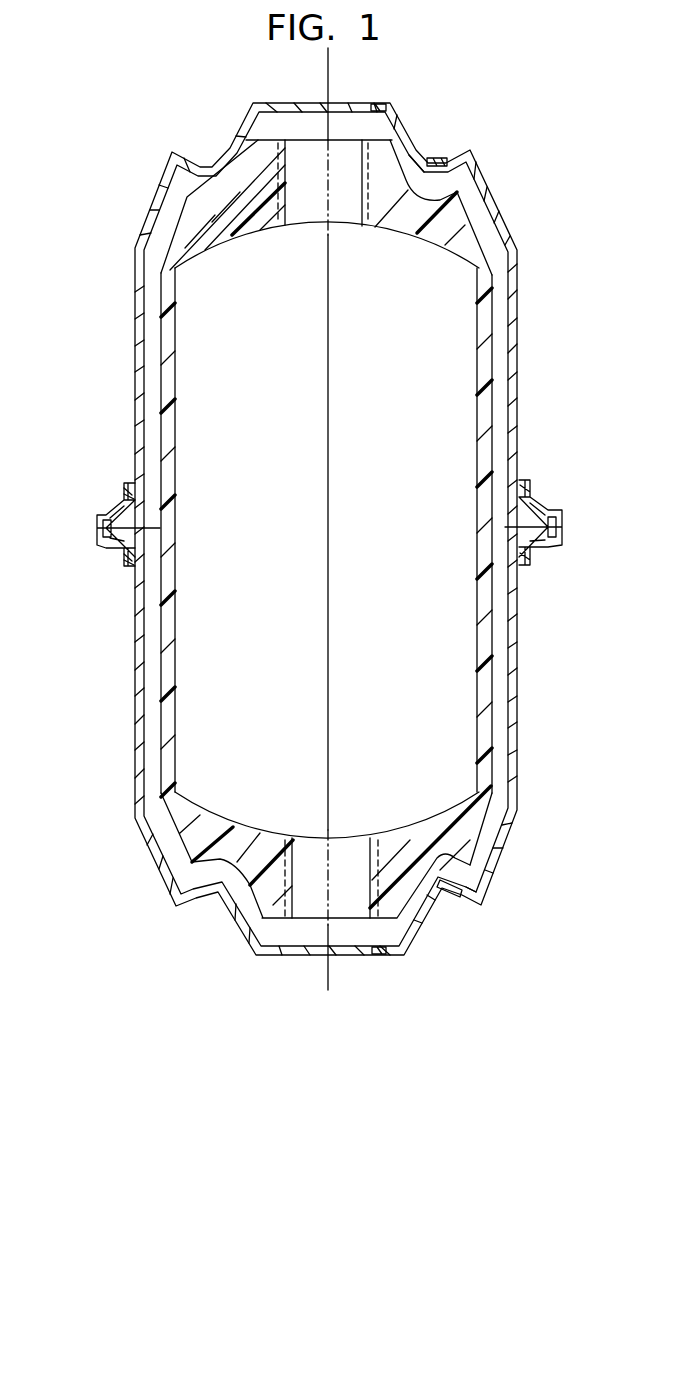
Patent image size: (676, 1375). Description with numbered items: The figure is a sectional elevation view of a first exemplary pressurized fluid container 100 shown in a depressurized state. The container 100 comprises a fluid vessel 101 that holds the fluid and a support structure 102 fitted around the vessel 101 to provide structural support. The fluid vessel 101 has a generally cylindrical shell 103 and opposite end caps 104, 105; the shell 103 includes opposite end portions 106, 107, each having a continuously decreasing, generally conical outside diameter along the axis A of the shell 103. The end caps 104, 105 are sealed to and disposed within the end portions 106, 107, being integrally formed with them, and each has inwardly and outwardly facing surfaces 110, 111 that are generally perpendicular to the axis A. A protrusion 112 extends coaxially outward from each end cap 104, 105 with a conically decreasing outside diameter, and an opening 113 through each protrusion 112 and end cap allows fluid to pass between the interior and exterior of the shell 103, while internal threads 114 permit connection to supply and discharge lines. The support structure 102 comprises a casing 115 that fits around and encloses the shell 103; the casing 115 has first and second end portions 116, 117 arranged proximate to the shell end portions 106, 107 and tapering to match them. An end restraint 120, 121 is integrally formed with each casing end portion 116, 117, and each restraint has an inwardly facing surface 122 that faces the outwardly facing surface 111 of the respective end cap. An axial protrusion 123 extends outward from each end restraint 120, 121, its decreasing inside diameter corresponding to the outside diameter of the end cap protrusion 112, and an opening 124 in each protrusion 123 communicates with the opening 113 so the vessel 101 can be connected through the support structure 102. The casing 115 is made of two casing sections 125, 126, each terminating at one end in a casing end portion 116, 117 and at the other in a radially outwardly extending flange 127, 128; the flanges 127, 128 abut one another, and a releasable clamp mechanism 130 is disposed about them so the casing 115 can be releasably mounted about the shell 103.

The fluid container 100 is at (525, 88).
The fluid vessel 101 is at (500, 380).
The support structure 102 is at (523, 417).
The shell 103 is at (475, 472).
The end cap 104 is at (395, 220).
The end cap 105 is at (390, 837).
The end portion of the shell 106 is at (478, 233).
The end portion of the shell 107 is at (487, 810).
The inwardly facing surface 110 is at (209, 250).
The outwardly facing surface 111 is at (208, 185).
The protrusion 112 is at (258, 148).
The opening 113 is at (307, 148).
The internal threads 114 is at (280, 210).
The casing 115 is at (132, 410).
The end portion of the casing 116 is at (147, 205).
The end portion of the casing 117 is at (162, 883).
The end restraint 120 is at (437, 158).
The end restraint 121 is at (435, 897).
The inwardly facing surface 122 is at (446, 178).
The axial protrusion 123 is at (398, 100).
The opening 124 is at (368, 103).
The casing section 125 is at (133, 290).
The casing section 126 is at (146, 690).
The flange 127 is at (123, 512).
The flange 128 is at (120, 557).
The releasable clamp mechanism 130 is at (96, 529).
The axis A is at (327, 598).